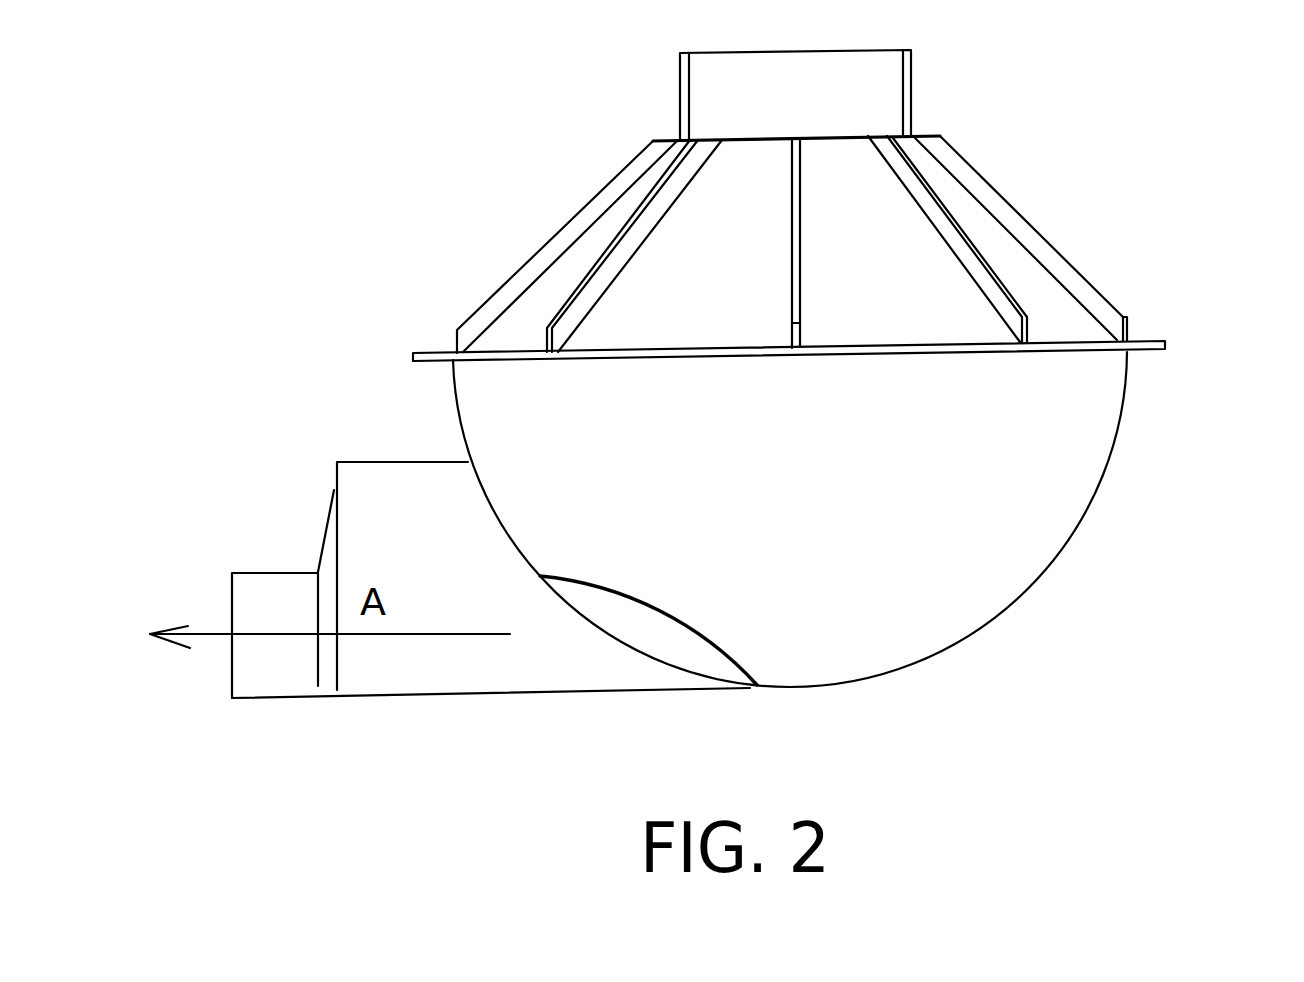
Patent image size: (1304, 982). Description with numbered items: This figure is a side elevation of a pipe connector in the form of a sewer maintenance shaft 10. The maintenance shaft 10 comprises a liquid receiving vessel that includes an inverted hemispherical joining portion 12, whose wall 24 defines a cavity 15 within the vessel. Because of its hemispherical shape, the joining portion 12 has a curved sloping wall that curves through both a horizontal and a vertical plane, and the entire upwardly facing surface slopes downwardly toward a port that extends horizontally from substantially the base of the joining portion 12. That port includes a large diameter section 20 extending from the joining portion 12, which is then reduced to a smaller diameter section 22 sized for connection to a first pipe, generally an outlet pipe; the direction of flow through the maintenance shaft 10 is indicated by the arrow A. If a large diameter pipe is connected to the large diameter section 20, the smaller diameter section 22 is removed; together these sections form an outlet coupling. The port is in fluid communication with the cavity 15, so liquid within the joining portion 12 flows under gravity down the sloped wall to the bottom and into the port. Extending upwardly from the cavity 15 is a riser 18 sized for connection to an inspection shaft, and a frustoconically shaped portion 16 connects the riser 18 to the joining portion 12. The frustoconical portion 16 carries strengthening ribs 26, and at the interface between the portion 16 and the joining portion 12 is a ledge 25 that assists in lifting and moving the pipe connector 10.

The sewer maintenance shaft 10 is at (338, 168).
The inverted hemispherical joining portion 12 is at (1097, 427).
The cavity 15 is at (800, 498).
The frustoconically shaped portion 16 is at (1042, 288).
The riser 18 is at (680, 85).
The large diameter section 20 is at (378, 465).
The smaller diameter section 22 is at (270, 582).
The wall 24 is at (1012, 600).
The ledge 25 is at (1137, 340).
The strengthening ribs 26 is at (1013, 215).